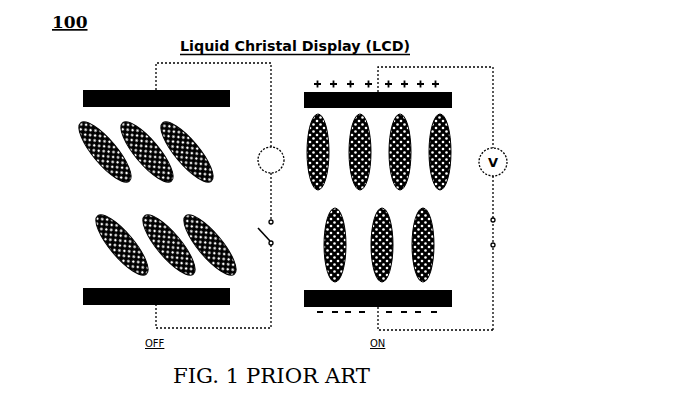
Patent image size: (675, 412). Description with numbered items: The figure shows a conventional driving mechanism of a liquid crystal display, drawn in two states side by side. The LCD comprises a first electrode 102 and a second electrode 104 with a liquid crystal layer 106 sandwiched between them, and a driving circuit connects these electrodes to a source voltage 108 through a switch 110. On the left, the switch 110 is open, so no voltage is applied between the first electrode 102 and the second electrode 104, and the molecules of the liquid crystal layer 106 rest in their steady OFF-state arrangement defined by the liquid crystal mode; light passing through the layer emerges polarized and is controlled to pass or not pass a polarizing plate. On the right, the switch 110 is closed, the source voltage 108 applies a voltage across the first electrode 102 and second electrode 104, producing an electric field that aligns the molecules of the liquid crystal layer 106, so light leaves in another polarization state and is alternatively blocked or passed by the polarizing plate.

The first electrode 102 is at (92, 90).
The second electrode 104 is at (93, 288).
The liquid crystal layer 106 is at (98, 160).
The source voltage 108 is at (256, 160).
The switch 110 is at (258, 230).